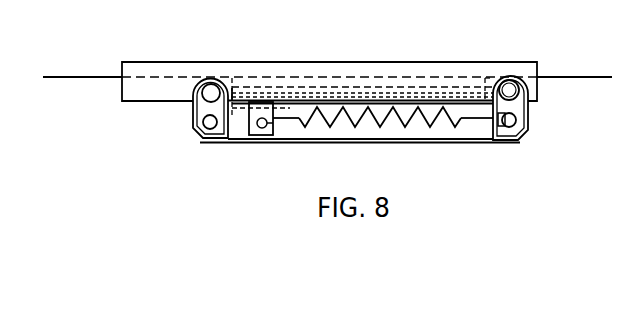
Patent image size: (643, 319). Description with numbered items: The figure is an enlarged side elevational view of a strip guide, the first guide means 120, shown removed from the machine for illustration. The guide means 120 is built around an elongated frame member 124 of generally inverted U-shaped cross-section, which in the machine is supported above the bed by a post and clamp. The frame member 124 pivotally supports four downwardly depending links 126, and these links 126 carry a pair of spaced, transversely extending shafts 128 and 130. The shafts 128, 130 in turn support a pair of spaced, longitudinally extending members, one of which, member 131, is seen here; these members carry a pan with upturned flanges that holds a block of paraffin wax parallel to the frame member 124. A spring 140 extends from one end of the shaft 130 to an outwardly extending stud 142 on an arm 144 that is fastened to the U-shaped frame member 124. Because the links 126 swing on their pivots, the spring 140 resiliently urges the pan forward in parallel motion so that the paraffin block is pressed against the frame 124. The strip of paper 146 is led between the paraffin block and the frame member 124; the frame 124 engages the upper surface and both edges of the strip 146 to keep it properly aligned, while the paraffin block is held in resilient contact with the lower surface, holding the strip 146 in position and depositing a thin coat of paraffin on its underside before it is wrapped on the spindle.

The first guide means 120 is at (347, 52).
The elongated frame member 124 is at (403, 68).
The links 126 is at (196, 103).
The shaft 128 is at (203, 123).
The shaft 130 is at (530, 128).
The longitudinally extending member 131 is at (453, 130).
The spring 140 is at (375, 125).
The stud 142 is at (290, 126).
The arm 144 is at (250, 123).
The strip of paper 146 is at (69, 77).